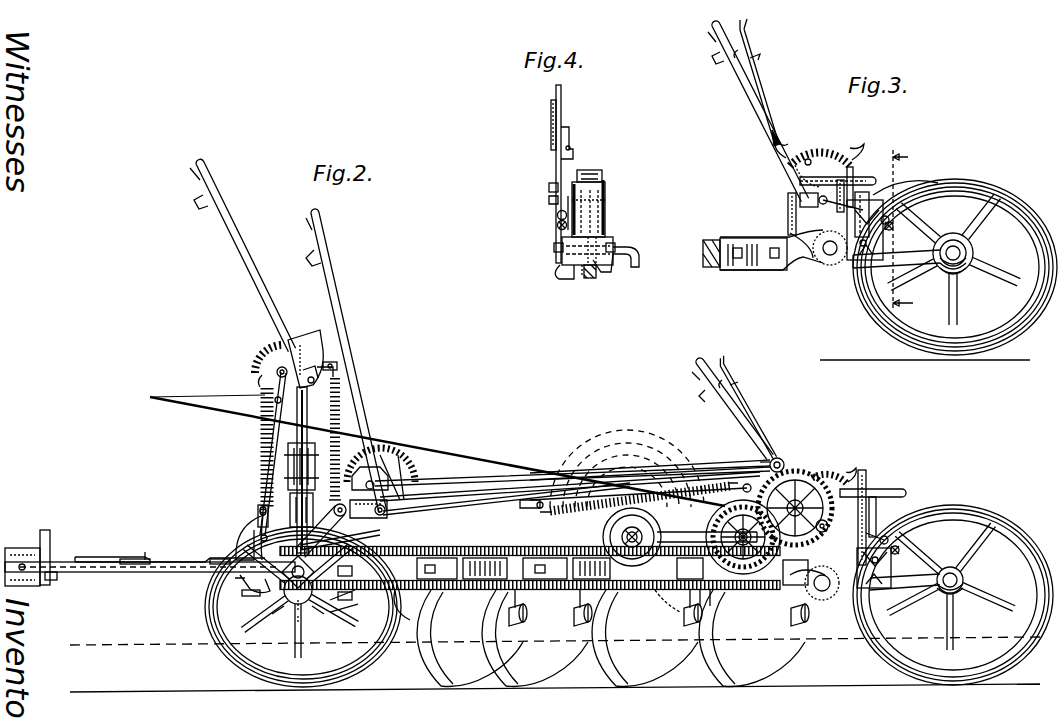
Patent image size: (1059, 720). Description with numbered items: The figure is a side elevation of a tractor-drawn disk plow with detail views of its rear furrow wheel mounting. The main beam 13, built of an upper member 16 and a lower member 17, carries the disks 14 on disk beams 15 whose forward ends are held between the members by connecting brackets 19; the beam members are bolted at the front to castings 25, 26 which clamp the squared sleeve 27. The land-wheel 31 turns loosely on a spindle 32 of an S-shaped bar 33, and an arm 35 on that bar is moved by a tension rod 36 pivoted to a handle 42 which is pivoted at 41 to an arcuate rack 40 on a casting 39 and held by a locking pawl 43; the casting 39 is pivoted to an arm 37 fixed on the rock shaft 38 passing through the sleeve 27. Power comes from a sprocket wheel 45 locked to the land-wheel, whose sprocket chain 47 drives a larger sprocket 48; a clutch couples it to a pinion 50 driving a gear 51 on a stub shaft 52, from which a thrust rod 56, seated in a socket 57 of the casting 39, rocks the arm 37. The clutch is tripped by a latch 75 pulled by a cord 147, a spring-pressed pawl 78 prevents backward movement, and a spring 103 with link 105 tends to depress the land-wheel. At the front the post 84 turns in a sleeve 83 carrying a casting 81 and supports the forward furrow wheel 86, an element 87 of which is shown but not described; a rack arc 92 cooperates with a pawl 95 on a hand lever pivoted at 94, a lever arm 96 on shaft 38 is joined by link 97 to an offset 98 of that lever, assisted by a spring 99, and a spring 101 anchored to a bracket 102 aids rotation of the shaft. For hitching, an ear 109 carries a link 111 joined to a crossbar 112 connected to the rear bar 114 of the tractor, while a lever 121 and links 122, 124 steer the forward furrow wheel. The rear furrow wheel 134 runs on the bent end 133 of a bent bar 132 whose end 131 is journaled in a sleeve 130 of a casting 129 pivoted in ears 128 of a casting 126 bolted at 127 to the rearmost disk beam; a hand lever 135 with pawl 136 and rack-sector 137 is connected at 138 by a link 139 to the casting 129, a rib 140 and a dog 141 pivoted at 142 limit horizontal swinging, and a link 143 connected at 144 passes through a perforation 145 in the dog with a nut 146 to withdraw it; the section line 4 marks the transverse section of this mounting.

In FIG. 3, the section line 4— 4 is at (904, 233).
In FIG. 2, the main beam 13 is at (348, 612).
In FIG. 2, the disks 14 is at (613, 638).
In FIG. 2, the disk beams 15 is at (470, 582).
In FIG. 2, the upper member 16 is at (435, 556).
In FIG. 2, the lower member 17 is at (445, 594).
In FIG. 2, the connecting brackets 19 is at (512, 556).
In FIG. 2, the casting 25 is at (380, 532).
In FIG. 2, the casting 26 is at (345, 590).
In FIG. 2, the squared sleeve 27 is at (330, 612).
In FIG. 2, the land-wheel 31 is at (586, 445).
In FIG. 2, the spindle 32 is at (604, 536).
In FIG. 2, the S-shaped bar 33 is at (806, 568).
In FIG. 2, the arm 35 is at (785, 460).
In FIG. 2, the tension rod 36 is at (645, 470).
In FIG. 2, the arm 37 is at (372, 510).
In FIG. 2, the rock shaft 38 is at (282, 605).
In FIG. 2, the casting 39 is at (470, 480).
In FIG. 2, the arcuate rack 40 is at (410, 462).
In FIG. 2, the pivot 41 is at (445, 482).
In FIG. 2, the handle 42 is at (350, 320).
In FIG. 2, the locking pawl 43 is at (392, 455).
In FIG. 2, the sprocket wheel 45 is at (685, 537).
In FIG. 2, the sprocket chain 47 is at (655, 500).
In FIG. 2, the sprocket 48 is at (700, 598).
In FIG. 2, the pinion 50 is at (745, 506).
In FIG. 2, the gear 51 is at (800, 470).
In FIG. 2, the stub shaft 52 is at (826, 505).
In FIG. 2, the thrust rod 56 is at (528, 510).
In FIG. 2, the socket 57 is at (356, 503).
In FIG. 2, the latch 75 is at (725, 485).
In FIG. 2, the spring-pressed pawl 78 is at (688, 586).
In FIG. 2, the casting 81 is at (362, 475).
In FIG. 2, the sleeve 83 is at (288, 460).
In FIG. 2, the post 84 is at (262, 401).
In FIG. 2, the forward furrow wheel 86 is at (228, 657).
In FIG. 2, the front wheel rim 87 is at (290, 640).
In FIG. 2, the rack arc 92 is at (310, 330).
In FIG. 2, the pivot 94 is at (318, 375).
In FIG. 2, the pawl 95 is at (265, 348).
In FIG. 2, the lever arm 96 is at (290, 500).
In FIG. 2, the link 97 is at (275, 428).
In FIG. 2, the offset 98 is at (276, 370).
In FIG. 2, the spring 99 is at (222, 408).
In FIG. 2, the spring 101 is at (342, 395).
In FIG. 2, the bracket 102 is at (340, 374).
In FIG. 2, the spring 103 is at (690, 470).
In FIG. 2, the link 105 is at (440, 507).
In FIG. 2, the perforated ear 109 is at (284, 590).
In FIG. 2, the link 111 is at (262, 512).
In FIG. 2, the crossbar 112 is at (255, 540).
In FIG. 2, the rear bar 114 is at (40, 585).
In FIG. 2, the lever 121 is at (186, 560).
In FIG. 2, the link 122 is at (228, 578).
In FIG. 2, the second link 124 is at (115, 556).
In FIG. 3, the casting 126 is at (768, 277).
In FIG. 3, the bolt 127 is at (732, 270).
In FIG. 3, the perforated ears 128 is at (836, 264).
In FIG. 2, the perforated ears 128 is at (818, 598).
In FIG. 4, the casting 129 is at (606, 212).
In FIG. 3, the casting 129 is at (872, 215).
In FIG. 3, the sleeve 130 is at (930, 185).
In FIG. 2, the sleeve 130 is at (790, 588).
In FIG. 4, the end of bar 131 is at (591, 174).
In FIG. 3, the end of bar 131 is at (866, 176).
In FIG. 2, the end of bar 131 is at (860, 488).
In FIG. 4, the bent cylindrical bar 132 is at (589, 279).
In FIG. 3, the bent cylindrical bar 132 is at (962, 280).
In FIG. 2, the bent cylindrical bar 132 is at (912, 600).
In FIG. 3, the outwardly bent end 133 is at (970, 251).
In FIG. 3, the rear furrow wheel 134 is at (983, 335).
In FIG. 2, the rear furrow wheel 134 is at (988, 516).
In FIG. 4, the hand lever 135 is at (563, 101).
In FIG. 3, the hand lever 135 is at (748, 88).
In FIG. 2, the hand lever 135 is at (715, 390).
In FIG. 4, the pawl 136 is at (550, 115).
In FIG. 3, the pawl 136 is at (762, 82).
In FIG. 2, the pawl 136 is at (748, 410).
In FIG. 4, the rack-sector 137 is at (572, 142).
In FIG. 3, the rack-sector 137 is at (814, 140).
In FIG. 2, the rack-sector 137 is at (822, 470).
In FIG. 4, the connection 138 is at (605, 185).
In FIG. 3, the connection 138 is at (856, 168).
In FIG. 2, the connection 138 is at (878, 500).
In FIG. 4, the link 139 is at (549, 188).
In FIG. 3, the link 139 is at (841, 180).
In FIG. 2, the link 139 is at (868, 495).
In FIG. 4, the projection or rib 140 is at (619, 276).
In FIG. 4, the dog 141 is at (576, 262).
In FIG. 3, the dog 141 is at (895, 240).
In FIG. 2, the dog 141 is at (950, 568).
In FIG. 4, the pivot 142 is at (555, 248).
In FIG. 3, the pivot 142 is at (866, 262).
In FIG. 2, the pivot 142 is at (855, 590).
In FIG. 4, the link 143 is at (575, 217).
In FIG. 3, the link 143 is at (795, 222).
In FIG. 2, the link 143 is at (915, 552).
In FIG. 3, the connection 144 is at (818, 204).
In FIG. 4, the perforation 145 is at (558, 215).
In FIG. 3, the perforation 145 is at (893, 218).
In FIG. 2, the perforation 145 is at (888, 538).
In FIG. 4, the nut 146 is at (558, 225).
In FIG. 3, the nut 146 is at (896, 226).
In FIG. 2, the nut 146 is at (900, 548).
In FIG. 2, the cord 147 is at (170, 393).